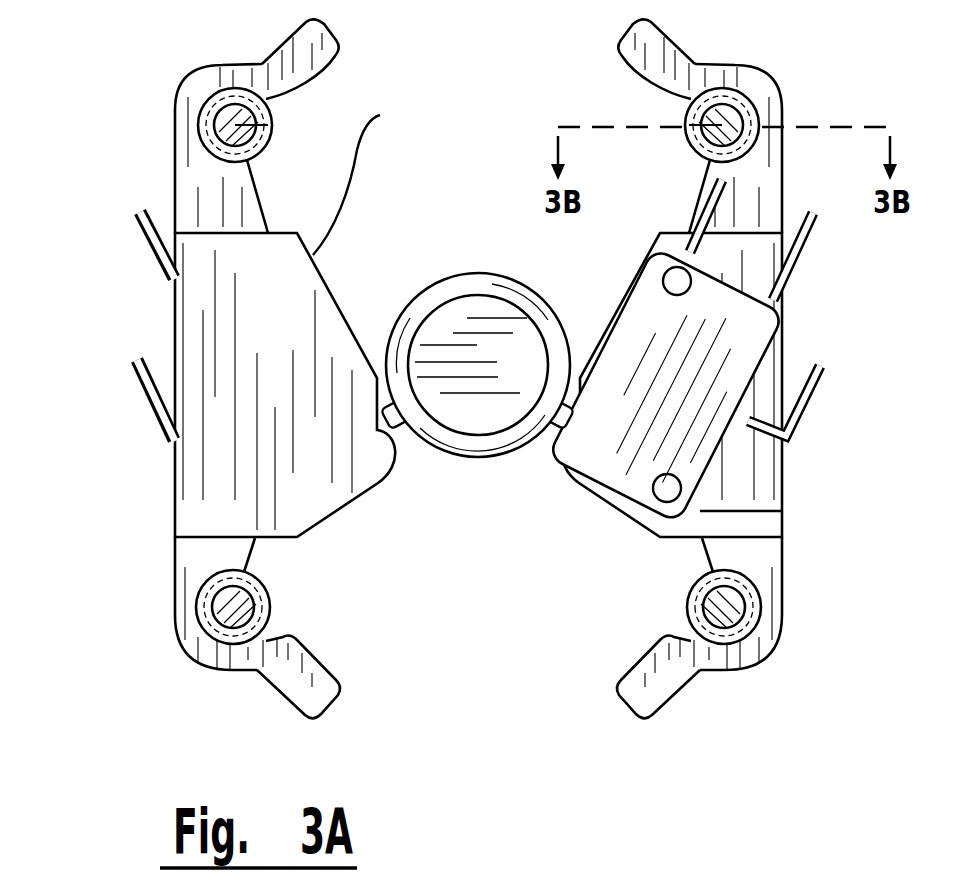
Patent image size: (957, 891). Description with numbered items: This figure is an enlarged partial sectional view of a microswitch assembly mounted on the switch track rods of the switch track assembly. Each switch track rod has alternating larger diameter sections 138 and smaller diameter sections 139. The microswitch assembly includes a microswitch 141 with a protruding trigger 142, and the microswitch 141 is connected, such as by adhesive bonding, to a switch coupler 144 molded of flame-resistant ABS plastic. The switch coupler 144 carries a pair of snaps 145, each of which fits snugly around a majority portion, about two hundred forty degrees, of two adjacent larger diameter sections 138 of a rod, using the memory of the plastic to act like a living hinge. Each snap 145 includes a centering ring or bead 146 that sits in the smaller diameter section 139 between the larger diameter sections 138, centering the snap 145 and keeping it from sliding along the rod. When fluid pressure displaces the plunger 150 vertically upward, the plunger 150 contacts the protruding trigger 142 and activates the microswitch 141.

The snap 145 is at (155, 92).
The smaller diameter section 139 is at (320, 70).
The larger diameter section 138 is at (273, 143).
The switch coupler 144 is at (267, 205).
The centering ring or bead 146 is at (265, 618).
The plunger 150 is at (473, 322).
The microswitch 141 is at (760, 332).
The protruding trigger 142 is at (547, 430).